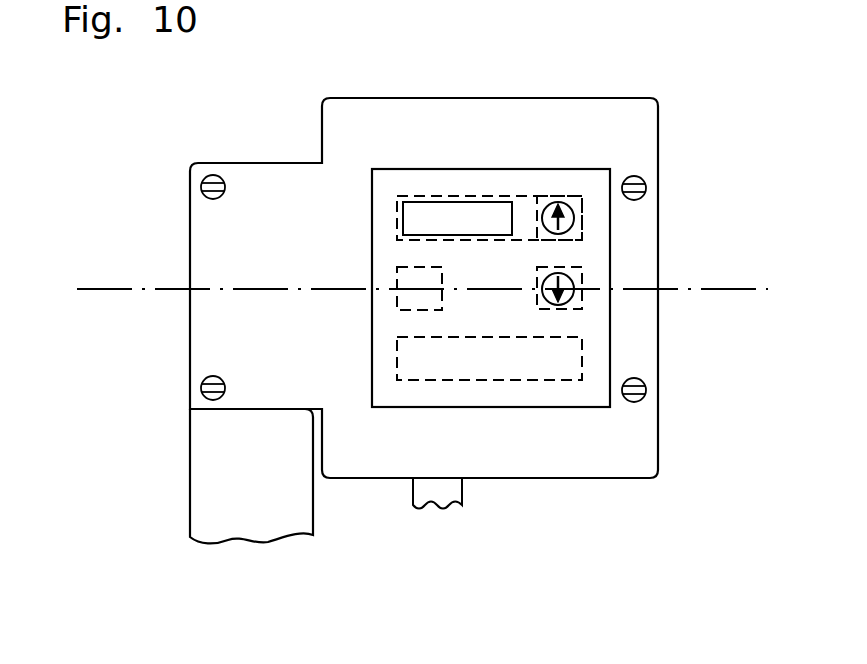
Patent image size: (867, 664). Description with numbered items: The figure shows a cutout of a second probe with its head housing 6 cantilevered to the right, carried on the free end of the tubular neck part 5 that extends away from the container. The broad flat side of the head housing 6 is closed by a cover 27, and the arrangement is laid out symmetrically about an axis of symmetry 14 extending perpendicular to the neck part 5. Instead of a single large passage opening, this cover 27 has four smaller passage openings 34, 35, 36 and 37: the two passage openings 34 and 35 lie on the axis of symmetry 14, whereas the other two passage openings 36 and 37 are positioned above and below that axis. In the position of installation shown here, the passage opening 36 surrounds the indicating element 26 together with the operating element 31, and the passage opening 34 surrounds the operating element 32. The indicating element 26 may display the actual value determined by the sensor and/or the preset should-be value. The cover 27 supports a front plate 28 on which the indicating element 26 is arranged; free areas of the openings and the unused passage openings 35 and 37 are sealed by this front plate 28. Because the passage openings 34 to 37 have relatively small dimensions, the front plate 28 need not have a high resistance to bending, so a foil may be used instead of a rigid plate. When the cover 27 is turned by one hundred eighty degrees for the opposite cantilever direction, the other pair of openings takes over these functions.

The neck part 5 is at (247, 505).
The head housing 6 is at (658, 152).
The axis of symmetry 14 is at (735, 291).
The indicating element 26 is at (418, 210).
The cover 27 is at (612, 460).
The front plate 28 is at (383, 393).
The operating element 31 is at (573, 205).
The operating element 32 is at (574, 295).
The passage opening 34 is at (582, 272).
The passage opening 35 is at (397, 290).
The passage opening 36 is at (525, 196).
The passage opening 37 is at (515, 380).